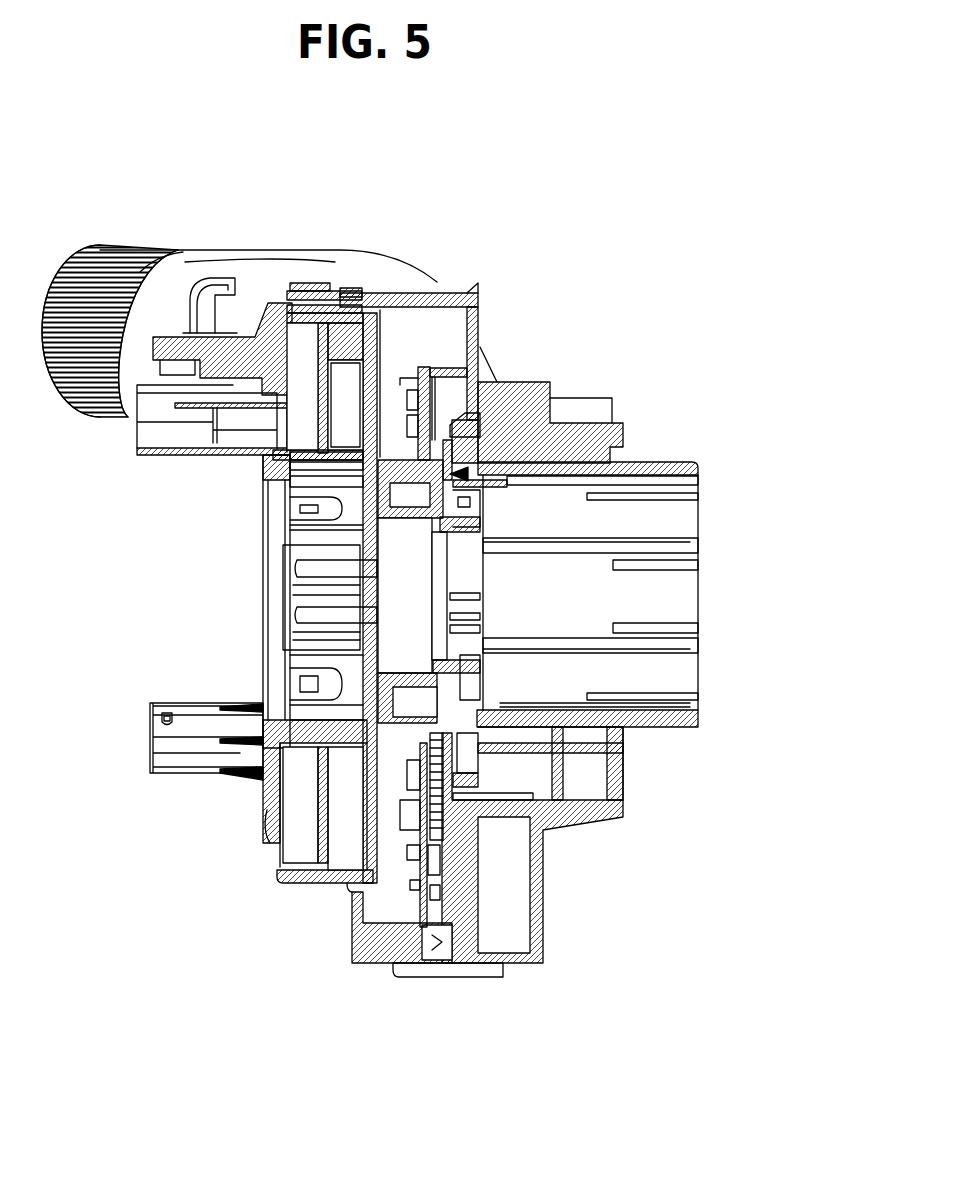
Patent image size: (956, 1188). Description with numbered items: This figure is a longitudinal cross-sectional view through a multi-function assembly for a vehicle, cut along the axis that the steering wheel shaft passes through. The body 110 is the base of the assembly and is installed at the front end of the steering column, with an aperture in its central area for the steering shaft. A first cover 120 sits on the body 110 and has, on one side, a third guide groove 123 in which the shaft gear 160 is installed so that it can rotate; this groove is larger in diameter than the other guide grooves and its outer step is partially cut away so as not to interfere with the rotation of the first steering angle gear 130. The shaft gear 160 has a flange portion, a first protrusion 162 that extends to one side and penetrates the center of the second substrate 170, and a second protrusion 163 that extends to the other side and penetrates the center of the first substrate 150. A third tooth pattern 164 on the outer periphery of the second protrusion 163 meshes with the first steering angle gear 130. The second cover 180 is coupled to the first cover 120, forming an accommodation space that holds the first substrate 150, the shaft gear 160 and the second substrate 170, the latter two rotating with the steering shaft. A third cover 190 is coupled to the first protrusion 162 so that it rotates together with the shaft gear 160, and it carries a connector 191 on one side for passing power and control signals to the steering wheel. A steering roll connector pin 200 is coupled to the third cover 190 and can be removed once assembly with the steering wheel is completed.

The steering roll connector pin 200 is at (243, 343).
The second cover 180 is at (378, 292).
The first substrate 150 is at (422, 377).
The first cover 120 is at (472, 308).
The body 110 is at (527, 392).
The third guide groove 123 is at (468, 474).
The shaft gear 160 is at (285, 668).
The first protrusion 162 is at (317, 458).
The second protrusion 163 is at (413, 470).
The third tooth pattern 164 is at (452, 482).
The connector 191 is at (155, 727).
The third cover 190 is at (267, 800).
The second substrate 170 is at (322, 833).
The first steering angle gear 130 is at (443, 835).